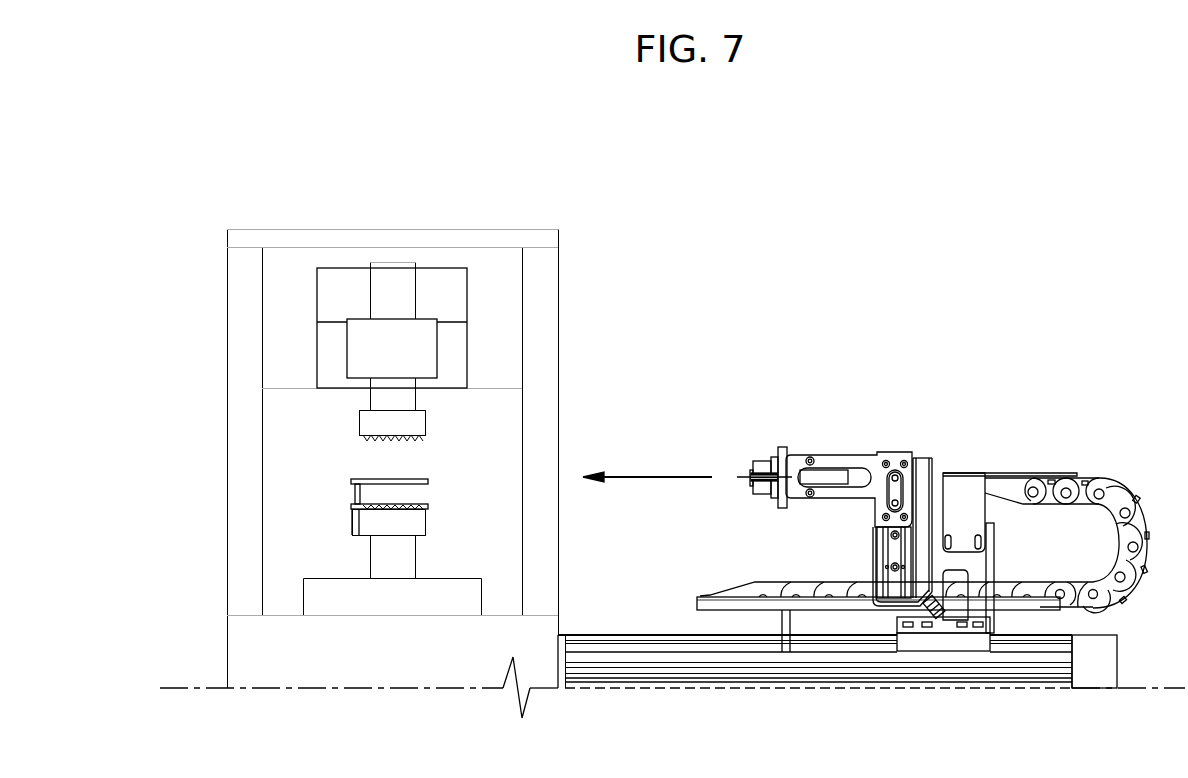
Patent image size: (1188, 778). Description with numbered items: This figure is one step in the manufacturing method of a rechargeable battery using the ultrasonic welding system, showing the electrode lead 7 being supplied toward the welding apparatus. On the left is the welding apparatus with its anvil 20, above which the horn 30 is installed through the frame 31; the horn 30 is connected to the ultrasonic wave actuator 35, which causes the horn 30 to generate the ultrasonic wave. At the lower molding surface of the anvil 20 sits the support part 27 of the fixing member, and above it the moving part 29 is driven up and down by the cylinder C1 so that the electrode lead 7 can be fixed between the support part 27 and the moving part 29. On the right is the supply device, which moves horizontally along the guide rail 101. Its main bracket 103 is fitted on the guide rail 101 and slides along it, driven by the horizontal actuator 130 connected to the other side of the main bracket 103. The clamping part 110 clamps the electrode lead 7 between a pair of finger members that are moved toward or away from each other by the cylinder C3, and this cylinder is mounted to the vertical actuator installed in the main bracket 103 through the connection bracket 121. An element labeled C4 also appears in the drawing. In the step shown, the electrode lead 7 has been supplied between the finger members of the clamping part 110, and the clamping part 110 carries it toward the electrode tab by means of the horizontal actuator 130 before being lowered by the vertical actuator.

The electrode lead 7 is at (746, 480).
The anvil 20 is at (403, 552).
The support part 27 is at (351, 508).
The moving part 29 is at (370, 481).
The horn 30 is at (423, 353).
The frame 31 is at (540, 323).
The ultrasonic wave actuator 35 is at (453, 292).
The guide rail 101 is at (980, 665).
The main bracket 103 is at (967, 488).
The clamping part 110 is at (752, 425).
The connection bracket 121 is at (845, 458).
The horizontal actuator 130 is at (1098, 480).
The cylinder C1 is at (357, 494).
The cylinder C3 is at (820, 475).
The guide rail C4 is at (918, 467).